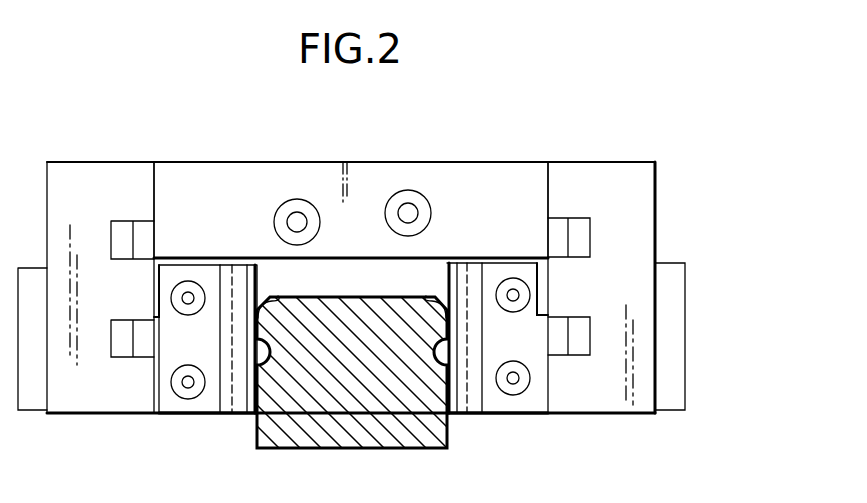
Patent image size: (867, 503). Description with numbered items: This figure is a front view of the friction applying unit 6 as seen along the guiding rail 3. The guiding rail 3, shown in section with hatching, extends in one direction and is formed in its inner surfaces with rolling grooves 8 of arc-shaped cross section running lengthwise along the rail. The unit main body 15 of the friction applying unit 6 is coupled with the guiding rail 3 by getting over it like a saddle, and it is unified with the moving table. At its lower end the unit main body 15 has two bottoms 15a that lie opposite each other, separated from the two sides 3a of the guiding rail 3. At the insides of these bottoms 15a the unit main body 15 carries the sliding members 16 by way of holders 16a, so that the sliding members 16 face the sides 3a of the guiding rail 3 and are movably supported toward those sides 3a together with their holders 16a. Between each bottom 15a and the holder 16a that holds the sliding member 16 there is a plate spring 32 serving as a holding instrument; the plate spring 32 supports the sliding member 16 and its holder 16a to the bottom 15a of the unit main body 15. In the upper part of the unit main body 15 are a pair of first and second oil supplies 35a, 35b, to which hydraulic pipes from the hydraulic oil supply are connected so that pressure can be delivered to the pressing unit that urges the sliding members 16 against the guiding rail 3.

The friction applying unit 6 is at (594, 151).
The unit main body 15 is at (375, 178).
The bottoms 15a is at (93, 405).
The sliding member 16 is at (248, 410).
The holder 16a is at (167, 405).
The plate spring 32 is at (157, 291).
The first oil supply 35a is at (287, 222).
The second oil supply 35b is at (418, 213).
The guiding rail 3 is at (355, 449).
The sides of the guiding rail 3a is at (248, 377).
The rolling groove 8 is at (272, 309).